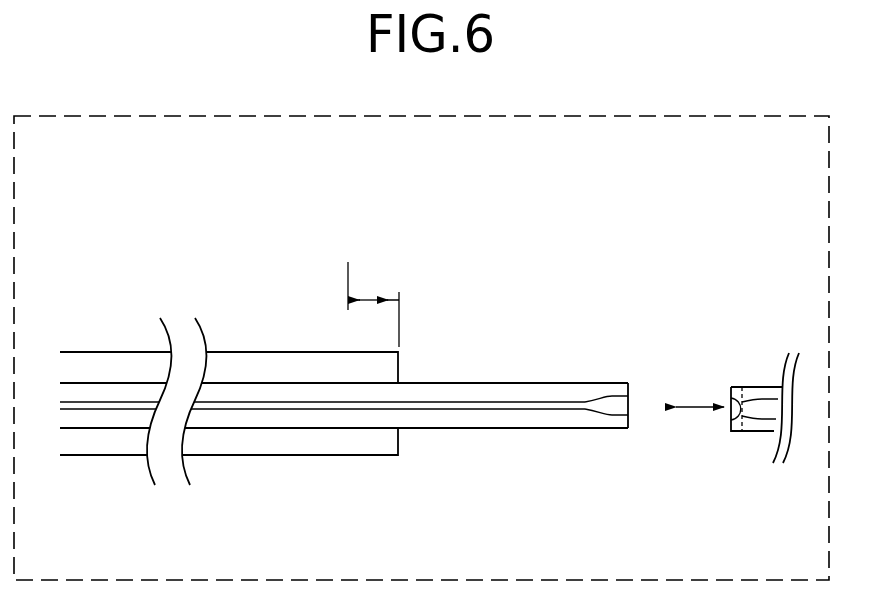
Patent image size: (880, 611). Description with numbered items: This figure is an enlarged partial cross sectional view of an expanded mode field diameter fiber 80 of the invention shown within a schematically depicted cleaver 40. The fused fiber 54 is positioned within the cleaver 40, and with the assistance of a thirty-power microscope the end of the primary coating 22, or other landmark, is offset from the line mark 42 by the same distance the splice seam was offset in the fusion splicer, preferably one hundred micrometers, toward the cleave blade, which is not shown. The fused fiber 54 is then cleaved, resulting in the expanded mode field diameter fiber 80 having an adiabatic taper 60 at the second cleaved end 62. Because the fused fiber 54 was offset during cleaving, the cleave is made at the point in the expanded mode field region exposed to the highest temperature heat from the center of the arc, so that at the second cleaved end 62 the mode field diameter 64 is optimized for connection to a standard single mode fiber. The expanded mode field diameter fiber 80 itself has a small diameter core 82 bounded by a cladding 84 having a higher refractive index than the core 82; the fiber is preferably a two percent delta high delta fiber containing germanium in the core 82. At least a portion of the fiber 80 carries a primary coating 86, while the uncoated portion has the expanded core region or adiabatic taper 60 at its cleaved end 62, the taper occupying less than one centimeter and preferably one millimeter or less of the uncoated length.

The primary coating 22 is at (399, 367).
The cleaver 40 is at (506, 526).
The line mark 42 is at (348, 279).
The fused fiber 54 is at (698, 243).
The adiabatic taper 60 is at (617, 412).
The second cleaved end 62 is at (628, 395).
The mode field diameter 64 is at (628, 408).
The expanded mode field diameter fiber 80 is at (484, 266).
The core 82 is at (243, 403).
The cladding 84 is at (252, 395).
The primary coating 86 is at (233, 362).